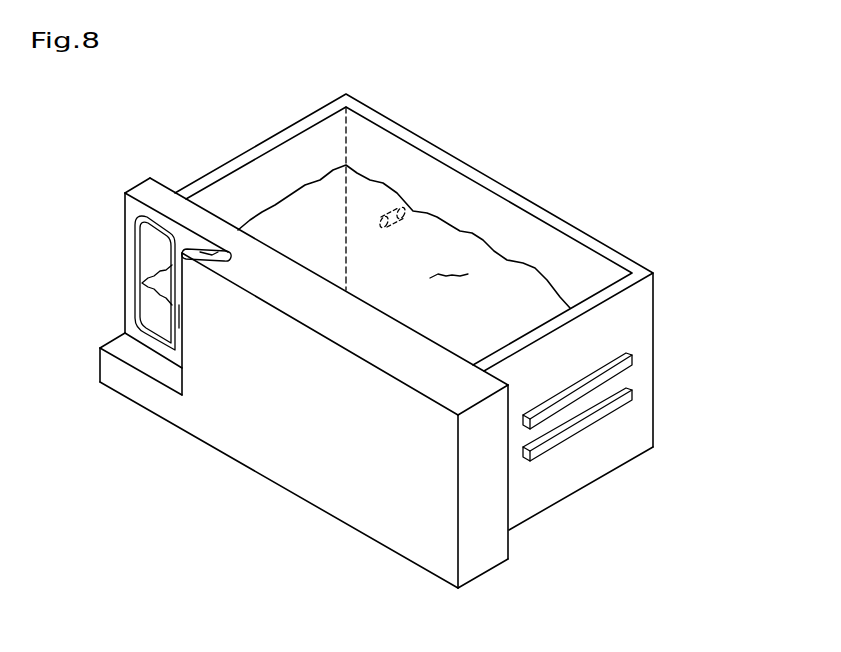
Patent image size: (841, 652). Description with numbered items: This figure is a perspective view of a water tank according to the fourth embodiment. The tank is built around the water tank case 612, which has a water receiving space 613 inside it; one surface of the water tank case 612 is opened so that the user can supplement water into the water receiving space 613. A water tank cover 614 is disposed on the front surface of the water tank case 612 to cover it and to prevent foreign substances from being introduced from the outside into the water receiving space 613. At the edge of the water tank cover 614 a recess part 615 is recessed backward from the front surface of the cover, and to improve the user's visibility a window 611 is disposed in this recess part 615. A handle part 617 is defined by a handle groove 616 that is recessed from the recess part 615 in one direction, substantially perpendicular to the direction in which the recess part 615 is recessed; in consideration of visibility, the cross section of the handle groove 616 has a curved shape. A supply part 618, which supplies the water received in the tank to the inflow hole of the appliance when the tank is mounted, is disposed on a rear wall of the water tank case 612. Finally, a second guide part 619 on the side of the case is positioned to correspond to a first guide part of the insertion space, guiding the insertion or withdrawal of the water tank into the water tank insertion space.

The window 611 is at (148, 245).
The water tank case 612 is at (643, 308).
The water receiving space 613 is at (449, 273).
The water tank cover 614 is at (240, 408).
The recess part 615 is at (178, 318).
The handle groove 616 is at (213, 250).
The handle part 617 is at (150, 218).
The supply part 618 is at (406, 206).
The second guide part 619 is at (628, 366).